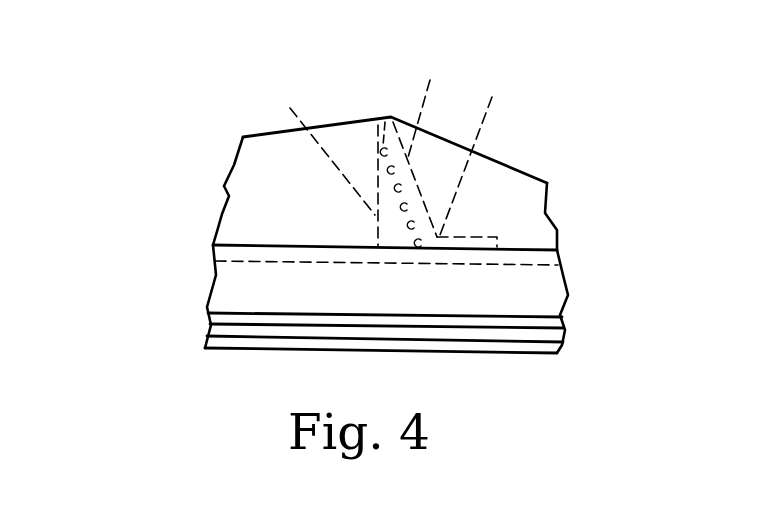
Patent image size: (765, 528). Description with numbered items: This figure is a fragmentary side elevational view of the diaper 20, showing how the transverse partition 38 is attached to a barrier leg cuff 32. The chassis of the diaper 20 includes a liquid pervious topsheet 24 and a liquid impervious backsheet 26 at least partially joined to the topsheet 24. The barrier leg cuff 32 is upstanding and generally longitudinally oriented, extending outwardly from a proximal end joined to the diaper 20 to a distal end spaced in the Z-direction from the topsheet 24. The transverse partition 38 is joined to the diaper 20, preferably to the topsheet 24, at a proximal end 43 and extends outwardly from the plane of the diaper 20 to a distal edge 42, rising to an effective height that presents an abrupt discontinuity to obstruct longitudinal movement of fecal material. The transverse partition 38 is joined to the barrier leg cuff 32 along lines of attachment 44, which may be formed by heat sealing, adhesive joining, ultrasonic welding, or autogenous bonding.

The diaper 20 is at (182, 293).
The topsheet 24 is at (213, 243).
The backsheet 26 is at (267, 350).
The barrier leg cuff 32 is at (472, 170).
The transverse partition 38 is at (326, 146).
The distal edge 42 is at (390, 117).
The proximal end 43 is at (485, 165).
The lines of attachment 44 is at (426, 99).